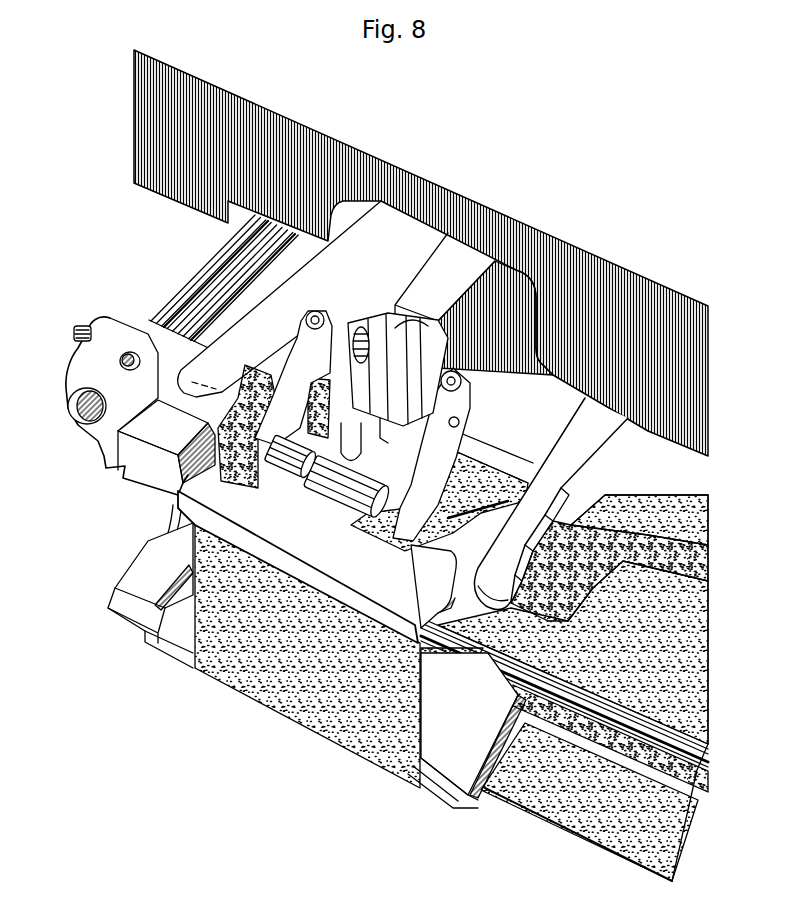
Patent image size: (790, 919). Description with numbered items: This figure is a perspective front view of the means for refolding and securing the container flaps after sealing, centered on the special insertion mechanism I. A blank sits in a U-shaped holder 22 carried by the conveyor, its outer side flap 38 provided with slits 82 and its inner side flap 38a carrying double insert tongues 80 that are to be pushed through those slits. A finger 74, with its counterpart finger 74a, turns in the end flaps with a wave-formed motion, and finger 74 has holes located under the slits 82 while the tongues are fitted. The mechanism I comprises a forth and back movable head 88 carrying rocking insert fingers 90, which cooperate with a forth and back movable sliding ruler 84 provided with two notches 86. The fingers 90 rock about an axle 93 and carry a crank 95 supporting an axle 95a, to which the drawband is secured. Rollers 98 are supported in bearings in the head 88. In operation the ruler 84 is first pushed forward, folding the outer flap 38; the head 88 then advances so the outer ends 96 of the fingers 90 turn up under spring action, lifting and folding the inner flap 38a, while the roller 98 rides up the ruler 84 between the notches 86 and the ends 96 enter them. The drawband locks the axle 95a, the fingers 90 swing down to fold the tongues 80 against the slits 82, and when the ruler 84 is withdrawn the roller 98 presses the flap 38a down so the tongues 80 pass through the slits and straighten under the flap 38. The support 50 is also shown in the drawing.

The holder 22 is at (148, 562).
The outer side flap 38 is at (463, 537).
The inner side flap 38a is at (667, 495).
The support foot 50 is at (424, 790).
The finger 74 is at (587, 535).
The finger 74a is at (197, 330).
The insert tongue 80 is at (280, 470).
The slit 82 is at (392, 552).
The sliding ruler 84 is at (160, 520).
The notch 86 is at (163, 482).
The head 88 is at (386, 460).
The insert finger 90 is at (252, 348).
The axle 93 is at (452, 400).
The crank 95 is at (333, 333).
The axle 95a is at (451, 414).
The outer end 96 is at (267, 468).
The roller 98 is at (327, 483).
The insertion mechanism I is at (430, 360).